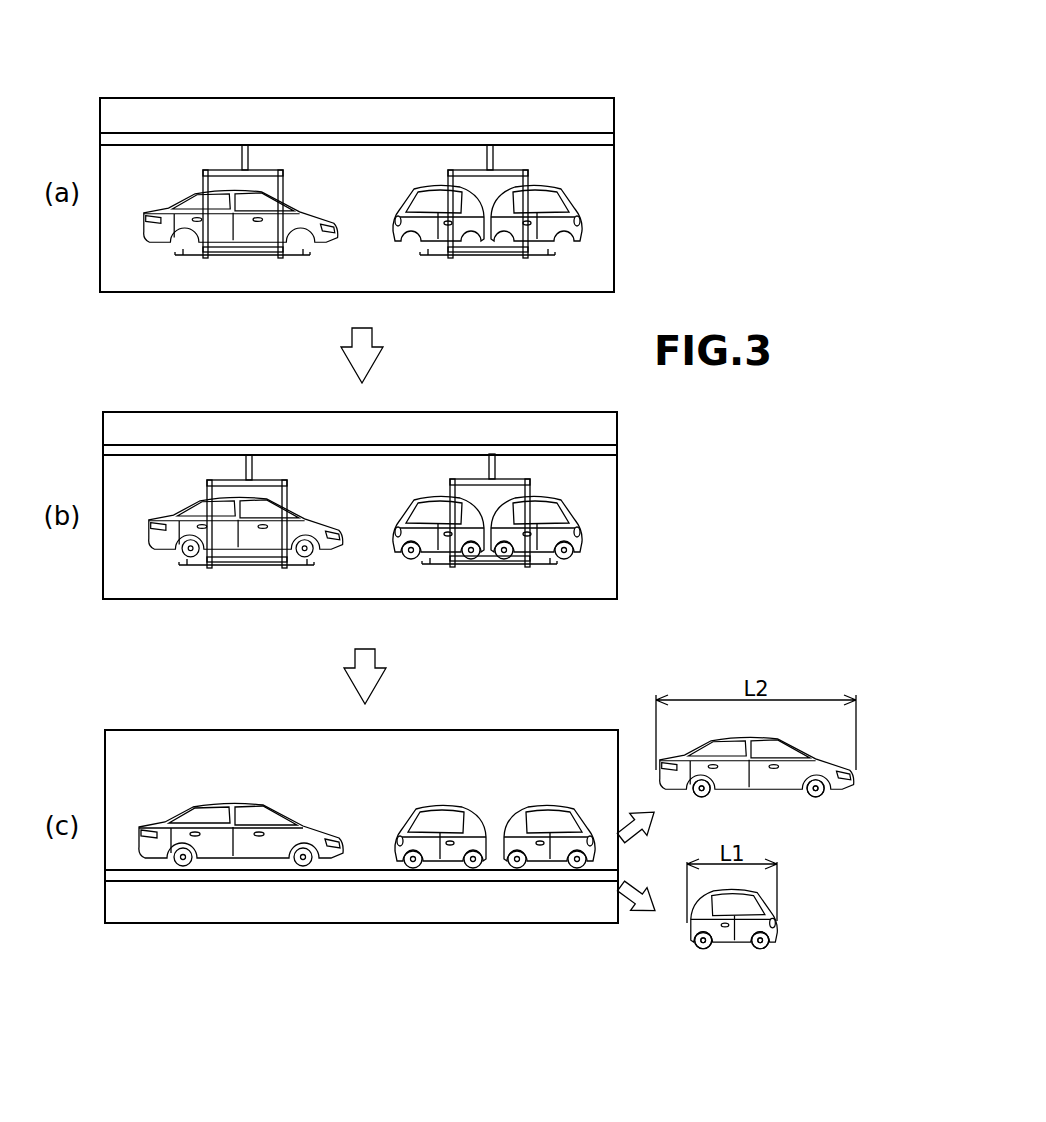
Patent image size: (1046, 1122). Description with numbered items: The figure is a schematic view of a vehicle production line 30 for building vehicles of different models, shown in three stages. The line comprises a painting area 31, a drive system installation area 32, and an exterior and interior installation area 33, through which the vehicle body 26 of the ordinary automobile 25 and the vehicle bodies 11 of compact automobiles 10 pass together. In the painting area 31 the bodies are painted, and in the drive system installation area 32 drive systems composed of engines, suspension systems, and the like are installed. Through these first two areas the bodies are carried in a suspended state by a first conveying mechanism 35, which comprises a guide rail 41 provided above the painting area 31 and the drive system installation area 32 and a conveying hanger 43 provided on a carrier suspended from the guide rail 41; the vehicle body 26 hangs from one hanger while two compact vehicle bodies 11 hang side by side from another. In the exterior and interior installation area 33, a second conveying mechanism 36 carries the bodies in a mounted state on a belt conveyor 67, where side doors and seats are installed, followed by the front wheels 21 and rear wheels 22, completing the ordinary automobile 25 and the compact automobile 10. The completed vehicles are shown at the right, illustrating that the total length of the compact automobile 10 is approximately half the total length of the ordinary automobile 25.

The compact automobile 10 is at (430, 812).
The vehicle body of the compact automobile 11 is at (415, 206).
The front wheels 21 is at (826, 798).
The rear wheels 22 is at (695, 798).
The ordinary automobile 25 is at (200, 805).
The vehicle body of the ordinary automobile 26 is at (183, 208).
The vehicle production line 30 is at (476, 78).
The painting area 31 is at (352, 108).
The drive system installation area 32 is at (433, 420).
The exterior and interior installation area 33 is at (437, 730).
The first conveying mechanism 35 is at (279, 126).
The second conveying mechanism 36 is at (371, 896).
The guide rail 41 is at (185, 135).
The conveying hanger 43 is at (238, 258).
The belt conveyor 67 is at (263, 876).